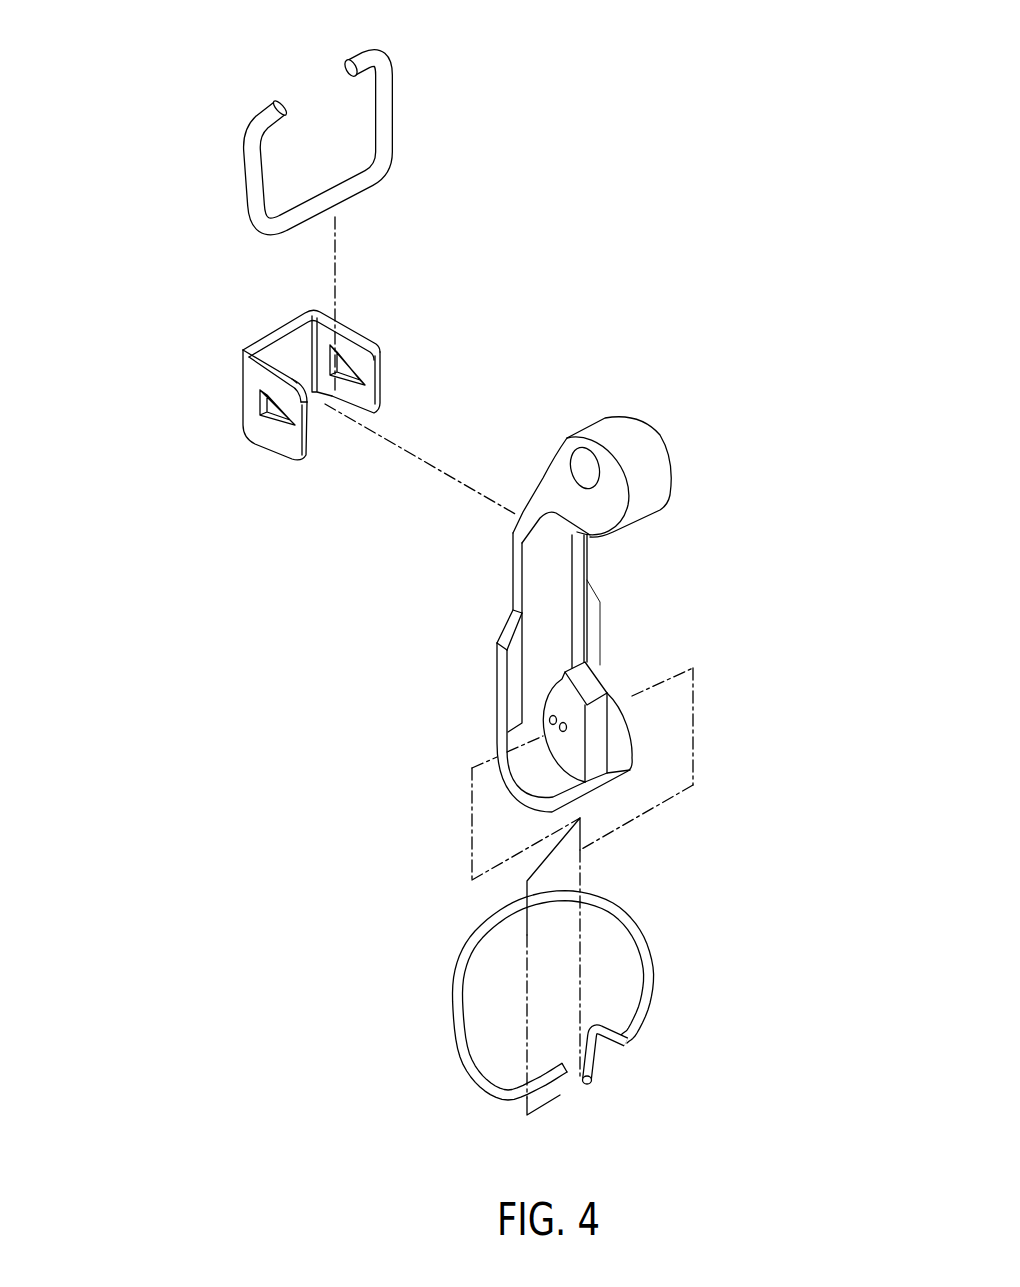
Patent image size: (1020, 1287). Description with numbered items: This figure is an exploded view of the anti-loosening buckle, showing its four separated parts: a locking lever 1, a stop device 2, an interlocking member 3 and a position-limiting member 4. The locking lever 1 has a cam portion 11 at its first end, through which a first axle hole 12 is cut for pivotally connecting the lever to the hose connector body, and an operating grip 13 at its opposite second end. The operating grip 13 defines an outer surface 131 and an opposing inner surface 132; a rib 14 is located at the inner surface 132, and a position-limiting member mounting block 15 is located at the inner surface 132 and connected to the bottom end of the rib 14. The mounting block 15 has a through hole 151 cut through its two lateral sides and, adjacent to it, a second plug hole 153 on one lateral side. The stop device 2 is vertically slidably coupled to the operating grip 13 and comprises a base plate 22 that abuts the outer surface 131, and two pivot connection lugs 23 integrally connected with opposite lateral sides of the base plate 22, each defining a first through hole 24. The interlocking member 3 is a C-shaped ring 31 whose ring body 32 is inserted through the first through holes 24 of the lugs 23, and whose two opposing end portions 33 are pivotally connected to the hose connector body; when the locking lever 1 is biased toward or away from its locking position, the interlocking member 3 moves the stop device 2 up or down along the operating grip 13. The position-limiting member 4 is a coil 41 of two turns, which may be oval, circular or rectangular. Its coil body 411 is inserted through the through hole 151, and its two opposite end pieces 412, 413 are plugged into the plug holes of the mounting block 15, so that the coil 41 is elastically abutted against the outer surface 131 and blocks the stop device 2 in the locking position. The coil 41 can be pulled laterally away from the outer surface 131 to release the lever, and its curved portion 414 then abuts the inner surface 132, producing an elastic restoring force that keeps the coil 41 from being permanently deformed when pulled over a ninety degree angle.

The locking lever 1 is at (512, 562).
The cam portion 11 is at (632, 440).
The first axle hole 12 is at (585, 460).
The operating grip 13 is at (537, 628).
The rib 14 is at (578, 582).
The position-limiting member mounting block 15 is at (575, 710).
The outer surface 131 is at (495, 685).
The inner surface 132 is at (517, 693).
The through hole 151 is at (570, 730).
The second plug hole 153 is at (545, 722).
The stop device 2 is at (243, 368).
The base plate 22 is at (283, 355).
The pivot connection lugs 23 is at (360, 355).
The first through hole 24 is at (352, 378).
The interlocking member 3 is at (392, 105).
The C-shaped ring 31 is at (361, 114).
The ring body 32 is at (340, 190).
The end portions 33 is at (343, 66).
The position-limiting member 4 is at (652, 950).
The coil 41 is at (571, 1020).
The coil body 411 is at (634, 980).
The end piece 412 is at (584, 1086).
The end piece 413 is at (563, 1067).
The curved portion 414 is at (600, 1033).